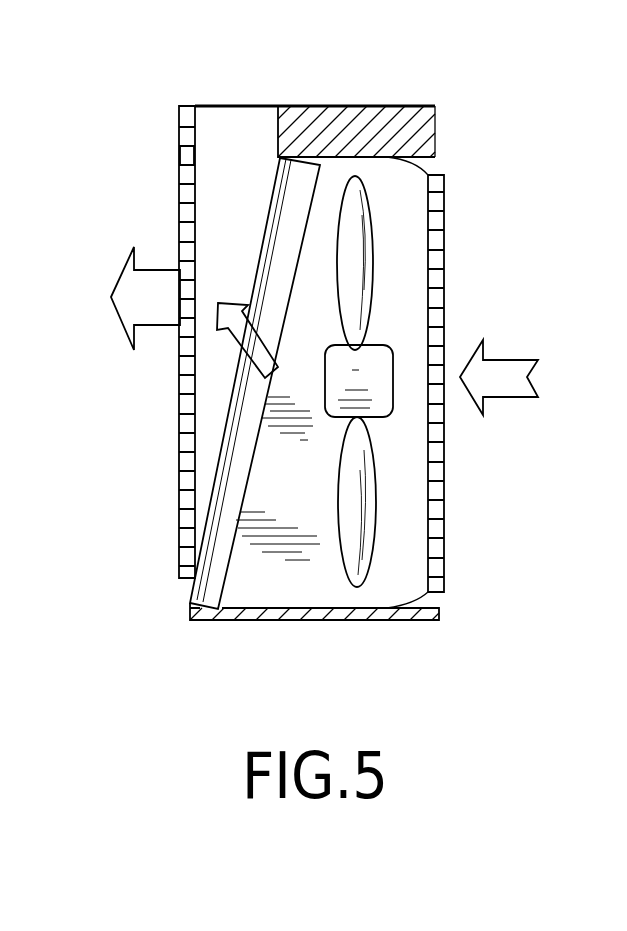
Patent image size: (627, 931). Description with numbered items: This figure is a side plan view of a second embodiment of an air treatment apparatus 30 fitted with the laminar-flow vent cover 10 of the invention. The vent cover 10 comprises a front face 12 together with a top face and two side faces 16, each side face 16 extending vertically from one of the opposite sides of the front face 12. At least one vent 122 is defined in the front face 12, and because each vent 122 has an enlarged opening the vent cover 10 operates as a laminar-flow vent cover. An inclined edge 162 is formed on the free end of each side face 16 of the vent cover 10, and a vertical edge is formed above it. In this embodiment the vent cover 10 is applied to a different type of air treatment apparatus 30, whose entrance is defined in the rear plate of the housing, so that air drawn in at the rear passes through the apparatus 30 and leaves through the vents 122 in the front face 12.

The vent cover 10 is at (128, 461).
The front face 12 is at (187, 112).
The vent 122 is at (181, 147).
The side face 16 is at (248, 122).
The inclined edge 162 is at (205, 504).
The air treatment apparatus 30 is at (495, 521).